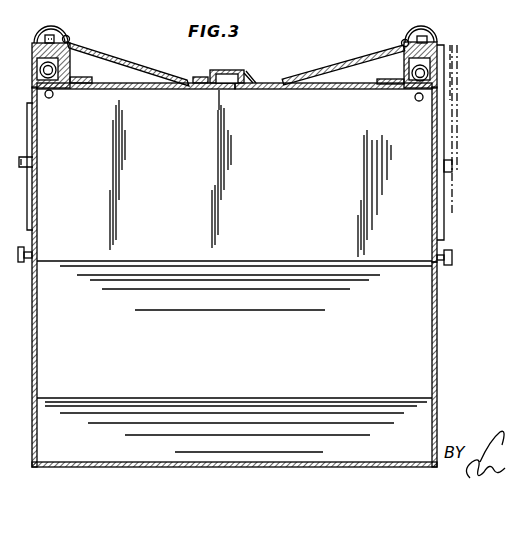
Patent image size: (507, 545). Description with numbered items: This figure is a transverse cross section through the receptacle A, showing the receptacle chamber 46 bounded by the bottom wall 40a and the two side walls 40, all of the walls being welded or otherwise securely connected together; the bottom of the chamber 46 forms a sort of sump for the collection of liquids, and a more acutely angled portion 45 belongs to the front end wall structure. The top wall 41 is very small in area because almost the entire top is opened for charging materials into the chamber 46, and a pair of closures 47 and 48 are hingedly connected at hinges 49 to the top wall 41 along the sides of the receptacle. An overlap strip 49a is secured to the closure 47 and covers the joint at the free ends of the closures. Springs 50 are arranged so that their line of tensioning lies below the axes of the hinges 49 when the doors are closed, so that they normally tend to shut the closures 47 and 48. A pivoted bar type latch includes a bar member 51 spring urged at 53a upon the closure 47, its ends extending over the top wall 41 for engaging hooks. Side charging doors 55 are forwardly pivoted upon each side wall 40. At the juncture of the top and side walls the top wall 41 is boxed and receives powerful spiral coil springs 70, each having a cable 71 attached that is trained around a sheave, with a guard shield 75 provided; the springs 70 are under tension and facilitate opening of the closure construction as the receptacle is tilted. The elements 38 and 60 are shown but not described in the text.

The side wall 40 is at (38, 218).
The bottom wall 40a is at (205, 468).
The receptacle chamber 46 is at (433, 331).
The closure 47 is at (152, 89).
The closure 48 is at (308, 90).
The spiral coil type spring 70 is at (58, 70).
The cable 71 is at (47, 33).
The guard shield 75 is at (48, 37).
The hinge 49 is at (68, 38).
The spring 50 is at (123, 62).
The spring urging means 53a is at (202, 78).
The bar member 51 is at (226, 76).
The overlap strip 49a is at (249, 82).
The top wall 41 is at (55, 91).
The side charging door 55 is at (38, 174).
The receptacle A is at (44, 183).
The side bolt 38 is at (32, 249).
The right side clip 60 is at (475, 168).
The bottom wall portion 45 is at (173, 408).